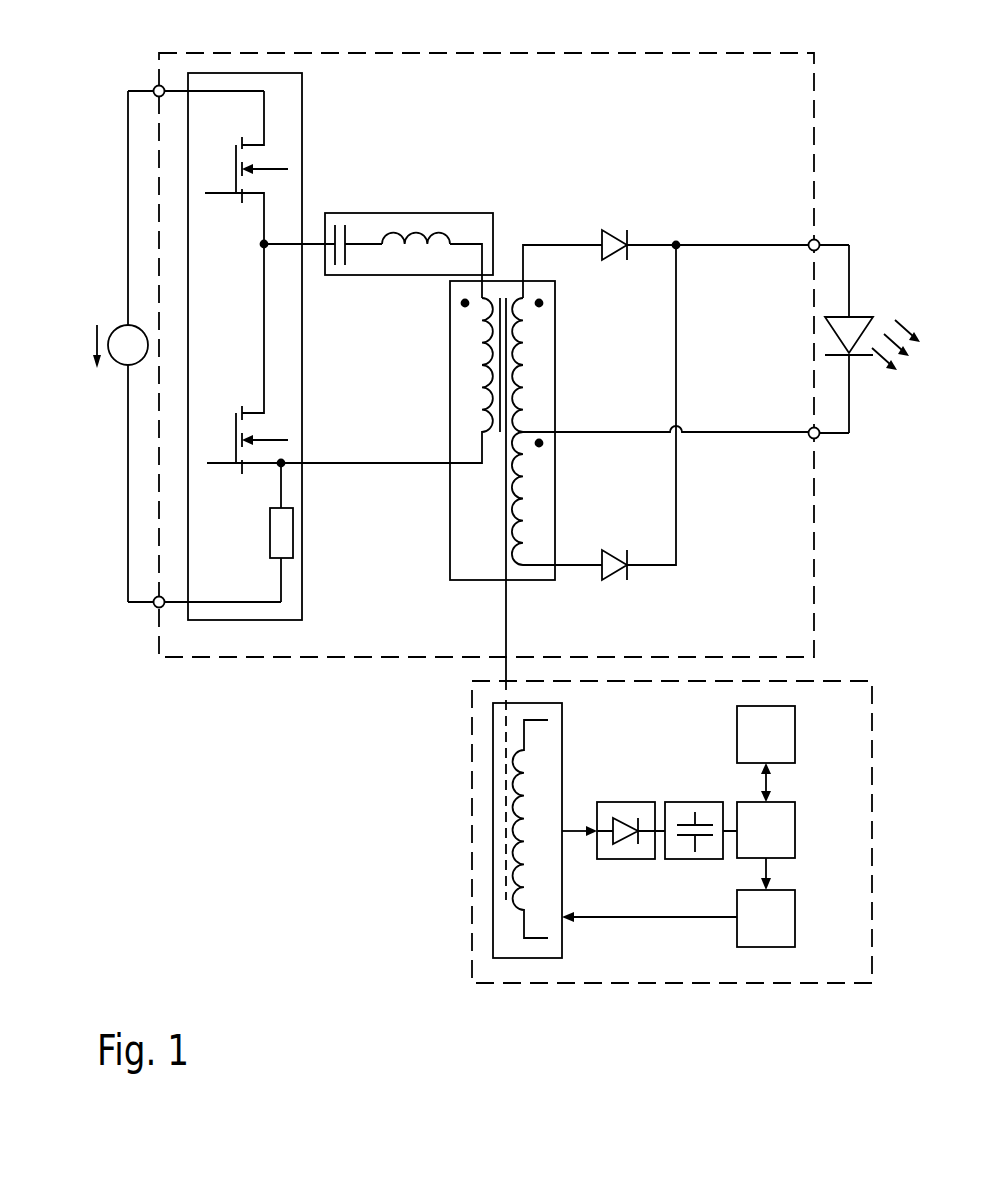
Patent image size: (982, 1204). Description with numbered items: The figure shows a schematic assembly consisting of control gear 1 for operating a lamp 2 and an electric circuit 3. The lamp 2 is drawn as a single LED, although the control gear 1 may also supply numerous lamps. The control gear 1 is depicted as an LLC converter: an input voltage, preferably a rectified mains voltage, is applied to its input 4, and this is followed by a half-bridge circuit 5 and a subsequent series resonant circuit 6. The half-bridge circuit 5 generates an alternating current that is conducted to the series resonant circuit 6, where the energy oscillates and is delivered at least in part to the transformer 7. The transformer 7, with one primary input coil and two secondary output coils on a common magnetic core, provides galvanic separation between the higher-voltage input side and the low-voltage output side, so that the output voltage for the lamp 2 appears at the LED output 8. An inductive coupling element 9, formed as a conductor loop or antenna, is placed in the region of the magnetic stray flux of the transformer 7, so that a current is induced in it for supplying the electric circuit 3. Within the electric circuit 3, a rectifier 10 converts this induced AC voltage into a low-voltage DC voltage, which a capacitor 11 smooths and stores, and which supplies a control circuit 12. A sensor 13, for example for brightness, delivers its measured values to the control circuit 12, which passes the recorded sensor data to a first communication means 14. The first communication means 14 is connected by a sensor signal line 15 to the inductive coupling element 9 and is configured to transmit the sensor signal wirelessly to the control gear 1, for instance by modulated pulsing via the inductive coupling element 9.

The control gear 1 is at (675, 53).
The lamp 2 is at (878, 288).
The electric circuit 3 is at (612, 983).
The input 4 is at (143, 623).
The half-bridge circuit 5 is at (302, 118).
The series resonant circuit 6 is at (407, 213).
The transformer 7 is at (450, 553).
The LED output 8 is at (832, 452).
The inductive coupling element 9 is at (520, 960).
The rectifier 10 is at (627, 802).
The capacitor 11 is at (694, 802).
The control circuit 12 is at (795, 831).
The sensor 13 is at (795, 735).
The first communication means 14 is at (795, 918).
The control line 15 is at (662, 918).